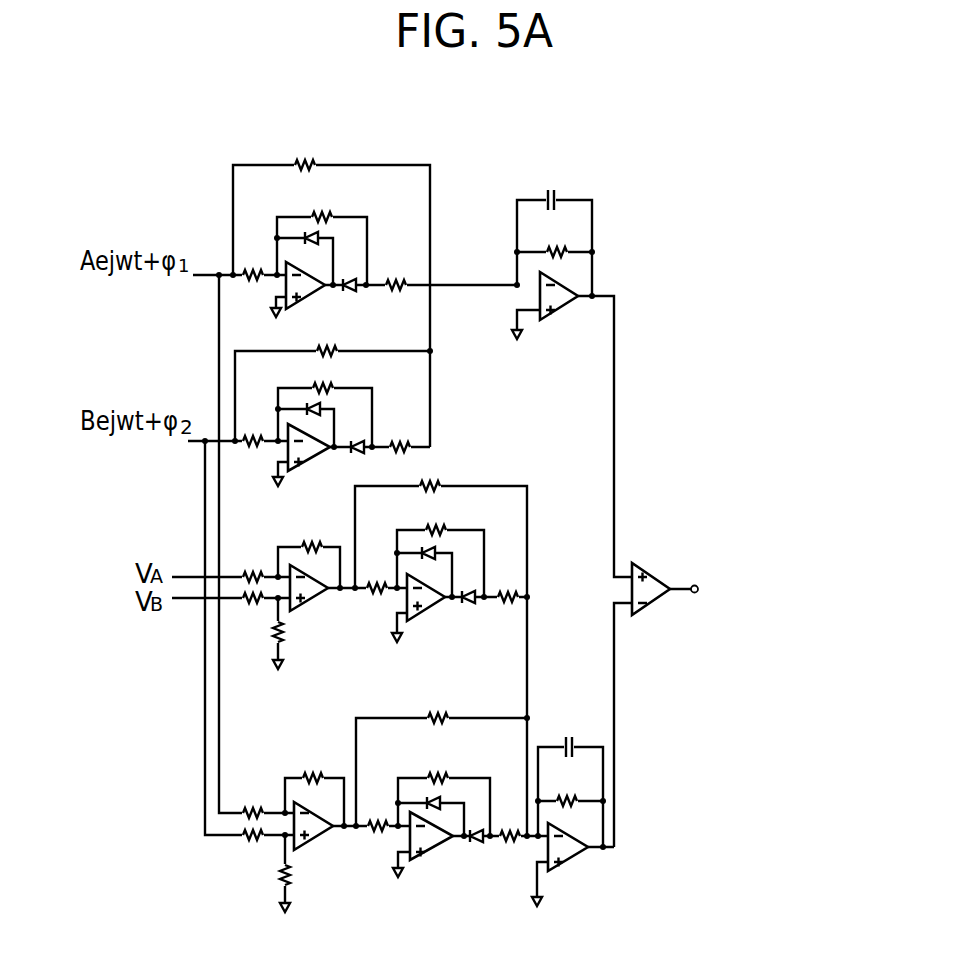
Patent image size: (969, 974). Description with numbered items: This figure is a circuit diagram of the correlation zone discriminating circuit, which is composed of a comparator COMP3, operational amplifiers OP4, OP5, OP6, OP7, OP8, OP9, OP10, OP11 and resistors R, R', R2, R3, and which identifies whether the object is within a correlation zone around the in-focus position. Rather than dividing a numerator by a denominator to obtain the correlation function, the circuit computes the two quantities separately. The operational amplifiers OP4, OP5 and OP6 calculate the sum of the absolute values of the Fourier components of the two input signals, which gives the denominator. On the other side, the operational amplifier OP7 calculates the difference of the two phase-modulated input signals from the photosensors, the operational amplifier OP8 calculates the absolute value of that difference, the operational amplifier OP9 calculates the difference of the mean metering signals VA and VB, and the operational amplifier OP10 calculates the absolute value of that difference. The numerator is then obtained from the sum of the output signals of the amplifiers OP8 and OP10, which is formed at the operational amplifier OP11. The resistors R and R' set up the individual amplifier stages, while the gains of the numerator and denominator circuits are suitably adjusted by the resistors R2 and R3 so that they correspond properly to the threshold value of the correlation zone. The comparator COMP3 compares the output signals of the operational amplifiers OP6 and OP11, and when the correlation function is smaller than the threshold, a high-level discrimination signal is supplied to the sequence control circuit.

The operational amplifier OP4 is at (318, 304).
The operational amplifier OP5 is at (317, 471).
The operational amplifier OP6 is at (553, 320).
The operational amplifier OP7 is at (318, 849).
The operational amplifier OP8 is at (436, 851).
The operational amplifier OP9 is at (316, 612).
The operational amplifier OP10 is at (434, 614).
The operational amplifier OP11 is at (570, 872).
The comparator COMP3 is at (665, 558).
The resistor R is at (352, 464).
The resistor R' is at (454, 528).
The resistor R2 is at (555, 248).
The resistor R3 is at (565, 798).